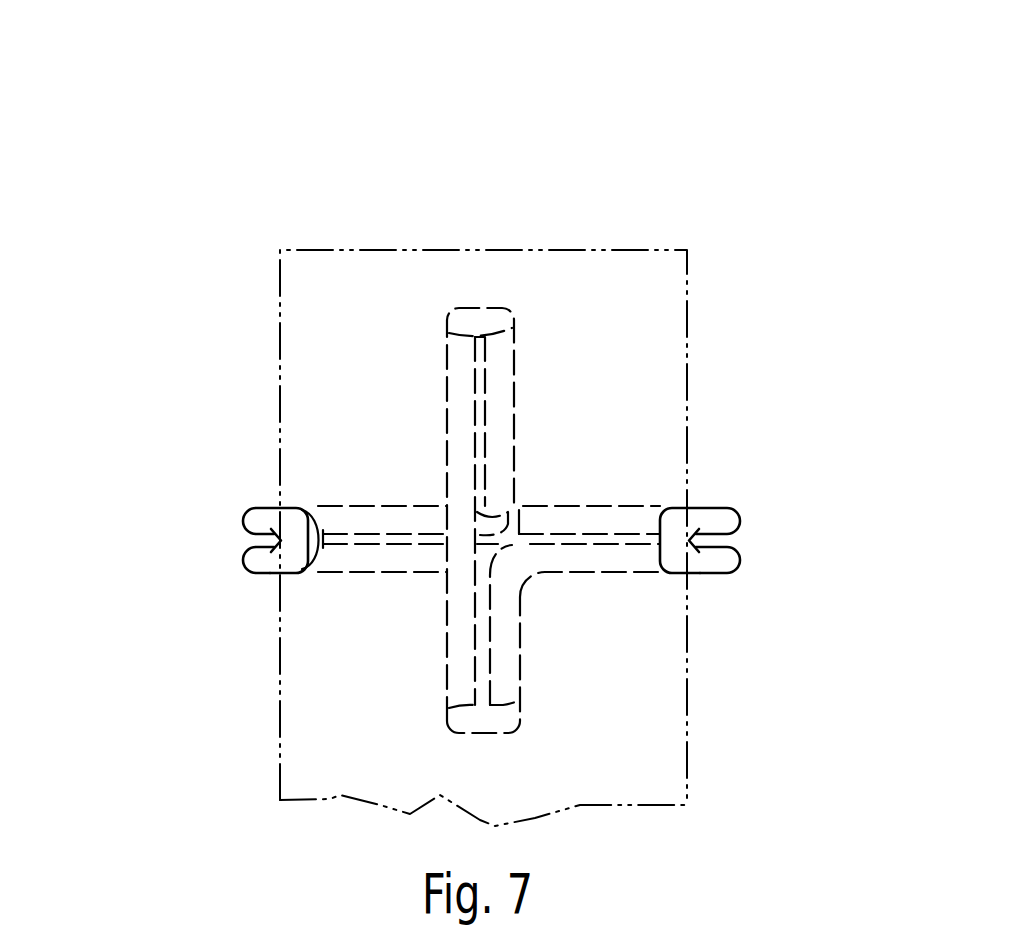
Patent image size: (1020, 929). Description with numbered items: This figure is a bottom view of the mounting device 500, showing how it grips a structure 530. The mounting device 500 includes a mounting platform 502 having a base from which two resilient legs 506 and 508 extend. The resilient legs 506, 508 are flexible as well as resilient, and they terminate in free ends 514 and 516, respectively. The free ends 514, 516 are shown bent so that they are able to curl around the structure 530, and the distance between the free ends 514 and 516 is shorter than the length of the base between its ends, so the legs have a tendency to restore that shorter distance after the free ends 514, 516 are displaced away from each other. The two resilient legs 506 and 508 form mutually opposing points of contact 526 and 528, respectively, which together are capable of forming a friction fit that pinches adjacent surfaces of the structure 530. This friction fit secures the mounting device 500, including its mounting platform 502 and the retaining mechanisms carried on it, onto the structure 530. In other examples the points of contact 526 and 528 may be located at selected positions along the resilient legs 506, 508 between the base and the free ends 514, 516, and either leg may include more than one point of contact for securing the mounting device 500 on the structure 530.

The mounting device 500 is at (583, 135).
The mounting platform 502 is at (562, 428).
The resilient leg 506 is at (183, 543).
The resilient leg 508 is at (792, 526).
The free end 514 is at (252, 562).
The free end 516 is at (710, 562).
The point of contact 526 is at (260, 492).
The point of contact 528 is at (702, 488).
The structure 530 is at (408, 369).